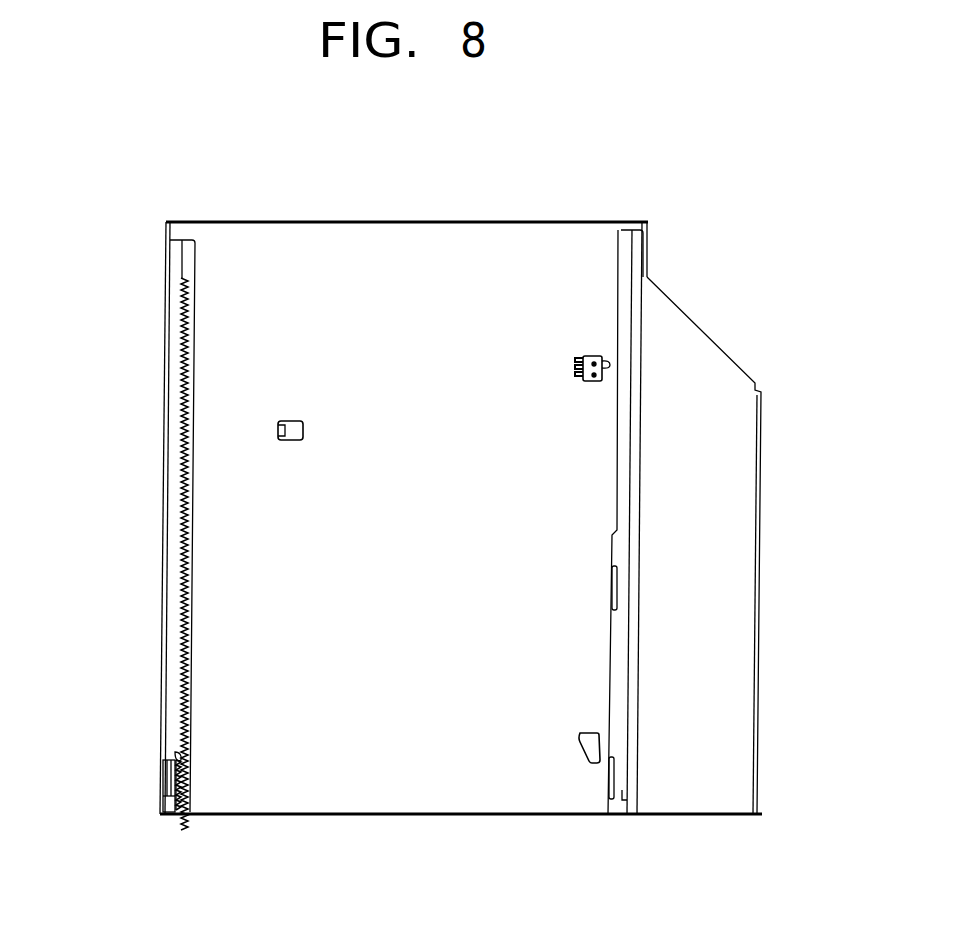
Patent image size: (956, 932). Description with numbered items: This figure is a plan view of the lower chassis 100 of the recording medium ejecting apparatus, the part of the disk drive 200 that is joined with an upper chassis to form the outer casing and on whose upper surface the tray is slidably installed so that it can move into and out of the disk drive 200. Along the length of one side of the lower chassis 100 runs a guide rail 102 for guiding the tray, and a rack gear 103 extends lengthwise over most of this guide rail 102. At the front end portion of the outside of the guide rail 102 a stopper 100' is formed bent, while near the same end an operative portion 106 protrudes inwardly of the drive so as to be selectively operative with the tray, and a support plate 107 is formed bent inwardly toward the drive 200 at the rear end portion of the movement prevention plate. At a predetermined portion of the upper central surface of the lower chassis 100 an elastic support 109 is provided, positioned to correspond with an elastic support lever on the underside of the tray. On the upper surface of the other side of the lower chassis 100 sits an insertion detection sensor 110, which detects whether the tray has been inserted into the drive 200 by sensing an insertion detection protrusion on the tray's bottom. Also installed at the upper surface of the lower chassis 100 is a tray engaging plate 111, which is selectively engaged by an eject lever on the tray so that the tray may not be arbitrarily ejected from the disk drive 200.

The lower chassis 100 is at (499, 518).
The stopper 100' is at (121, 798).
The guide rail 102 is at (168, 440).
The rack gear 103 is at (183, 657).
The operative portion 106 is at (188, 769).
The support plate 107 is at (172, 752).
The elastic support 109 is at (303, 429).
The insertion detection sensor 110 is at (590, 380).
The tray engaging plate 111 is at (600, 749).
The disk drive 200 is at (698, 270).